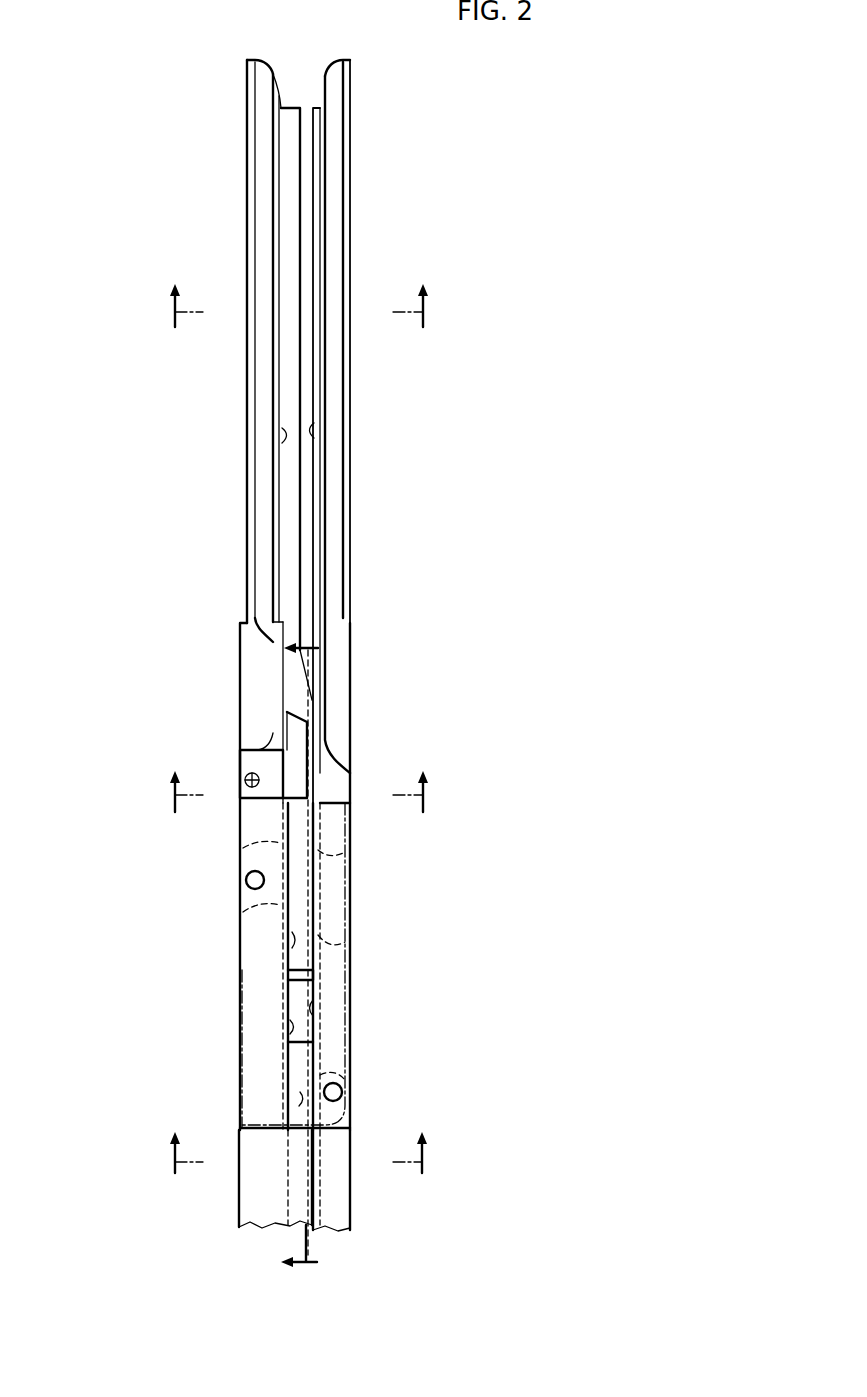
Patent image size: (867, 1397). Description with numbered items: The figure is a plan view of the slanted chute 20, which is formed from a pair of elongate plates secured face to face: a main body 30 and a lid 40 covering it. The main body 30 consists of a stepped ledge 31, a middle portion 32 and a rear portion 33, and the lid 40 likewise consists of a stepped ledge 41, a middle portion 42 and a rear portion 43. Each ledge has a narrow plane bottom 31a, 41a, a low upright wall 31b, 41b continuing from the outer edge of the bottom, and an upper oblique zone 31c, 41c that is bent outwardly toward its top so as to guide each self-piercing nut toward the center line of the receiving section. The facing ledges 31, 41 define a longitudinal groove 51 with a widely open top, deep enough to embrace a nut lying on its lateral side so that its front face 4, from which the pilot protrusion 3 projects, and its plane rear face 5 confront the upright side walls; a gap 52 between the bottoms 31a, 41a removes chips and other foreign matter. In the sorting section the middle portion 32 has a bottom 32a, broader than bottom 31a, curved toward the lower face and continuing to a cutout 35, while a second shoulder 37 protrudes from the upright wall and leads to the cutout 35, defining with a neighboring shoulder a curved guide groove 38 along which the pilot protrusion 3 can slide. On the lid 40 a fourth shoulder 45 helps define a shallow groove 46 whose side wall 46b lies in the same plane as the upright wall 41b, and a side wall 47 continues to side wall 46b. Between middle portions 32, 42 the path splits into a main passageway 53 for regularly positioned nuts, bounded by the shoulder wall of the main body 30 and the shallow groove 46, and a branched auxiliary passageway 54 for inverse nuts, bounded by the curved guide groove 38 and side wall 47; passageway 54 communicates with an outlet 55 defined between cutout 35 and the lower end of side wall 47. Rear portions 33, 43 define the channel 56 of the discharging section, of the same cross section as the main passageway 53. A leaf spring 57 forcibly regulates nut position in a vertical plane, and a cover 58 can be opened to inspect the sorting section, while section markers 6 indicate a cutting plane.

The slanted chute 20 is at (128, 428).
The main body 30 is at (240, 590).
The stepped ledge 31 is at (247, 240).
The narrow plane bottom 31a is at (287, 390).
The low upright wall 31b is at (283, 436).
The upper oblique zone 31c is at (278, 537).
The middle portion 32 is at (240, 690).
The bottom of middle portion 32a is at (307, 905).
The rear portion 33 is at (239, 1200).
The cutout 35 is at (300, 982).
The second shoulder 37 is at (232, 853).
The curved guide groove 38 is at (233, 917).
The lid 40 is at (355, 592).
The stepped ledge 41 is at (350, 242).
The narrow plane bottom 41a is at (315, 390).
The low upright wall 41b is at (313, 432).
The upper oblique zone 41c is at (330, 498).
The middle portion 42 is at (350, 718).
The rear portion 43 is at (350, 1200).
The fourth shoulder 45 is at (327, 855).
The shallow groove 46 is at (358, 1082).
The side wall of shallow groove 46b is at (323, 942).
The side wall 47 is at (313, 1040).
The longitudinal groove 51 is at (287, 163).
The gap 52 is at (305, 198).
The main passageway 53 is at (300, 1098).
The branched auxiliary passageway 54 is at (295, 940).
The outlet 55 is at (300, 1007).
The channel 56 is at (297, 1182).
The leaf spring 57 is at (292, 733).
The cover 58 is at (240, 970).
The pilot protrusion 3 is at (300, 319).
The front face 4 is at (297, 808).
The plane rear face 5 is at (299, 1169).
The section line 6- 6 is at (313, 960).